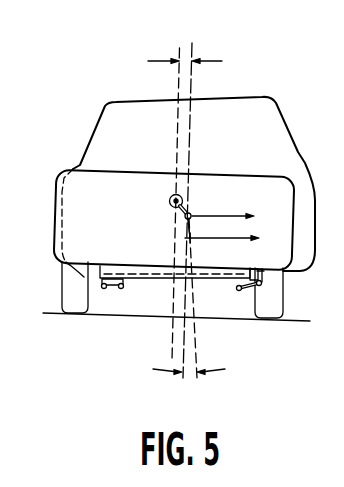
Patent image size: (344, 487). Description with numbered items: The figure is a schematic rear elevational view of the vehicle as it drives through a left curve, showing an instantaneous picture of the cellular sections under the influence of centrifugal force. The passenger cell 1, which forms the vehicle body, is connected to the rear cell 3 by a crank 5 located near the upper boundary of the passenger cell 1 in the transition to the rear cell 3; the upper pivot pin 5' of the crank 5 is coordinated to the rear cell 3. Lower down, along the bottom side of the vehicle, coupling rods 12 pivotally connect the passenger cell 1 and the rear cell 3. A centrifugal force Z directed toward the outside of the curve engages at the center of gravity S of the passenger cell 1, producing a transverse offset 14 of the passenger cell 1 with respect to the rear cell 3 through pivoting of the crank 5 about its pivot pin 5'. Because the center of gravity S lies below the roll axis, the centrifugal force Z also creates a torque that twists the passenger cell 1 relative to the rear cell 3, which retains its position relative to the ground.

The passenger cell 1 is at (245, 139).
The rear cell 3 is at (268, 202).
The crank 5 is at (164, 222).
The upper pivot pin 5' is at (160, 193).
The coupling rods 12 is at (117, 289).
The transverse offset 14 is at (182, 64).
The center of gravity S is at (191, 240).
The centrifugal force Z is at (227, 229).